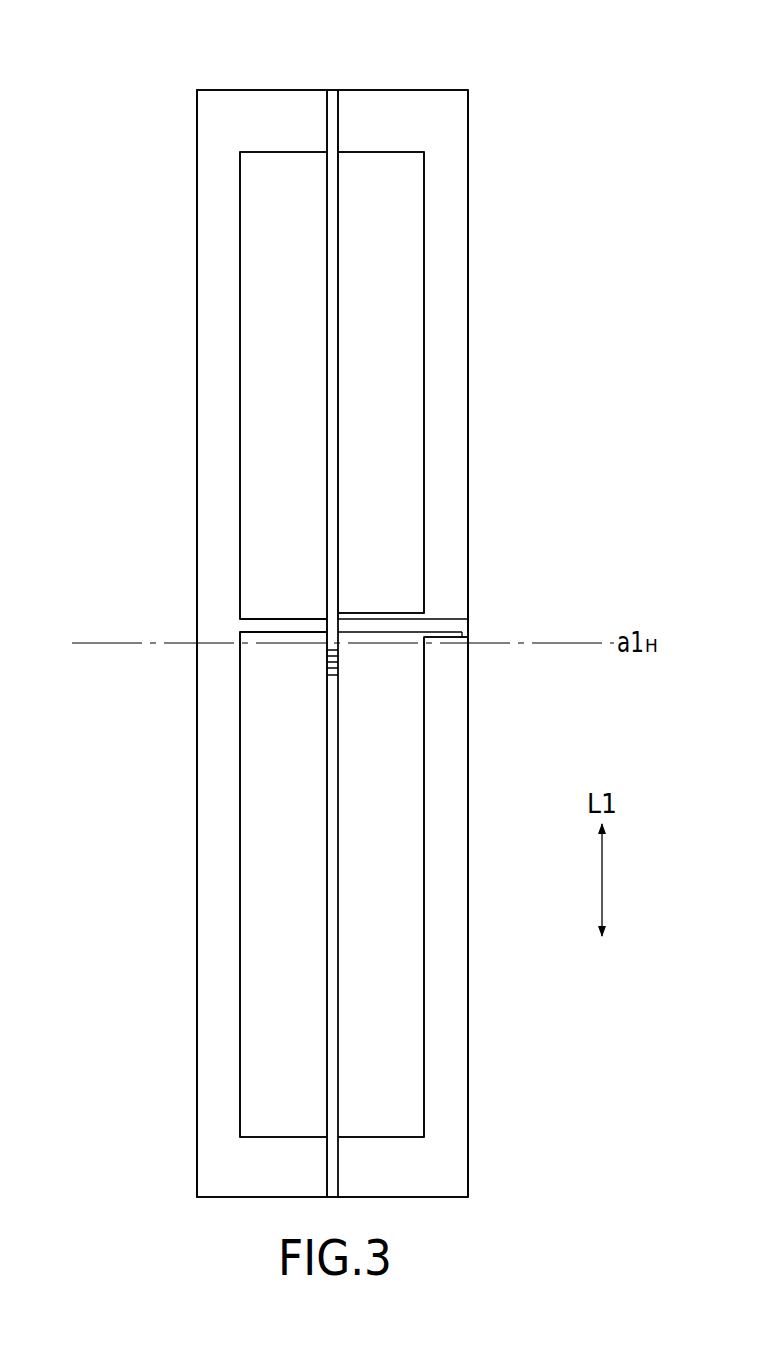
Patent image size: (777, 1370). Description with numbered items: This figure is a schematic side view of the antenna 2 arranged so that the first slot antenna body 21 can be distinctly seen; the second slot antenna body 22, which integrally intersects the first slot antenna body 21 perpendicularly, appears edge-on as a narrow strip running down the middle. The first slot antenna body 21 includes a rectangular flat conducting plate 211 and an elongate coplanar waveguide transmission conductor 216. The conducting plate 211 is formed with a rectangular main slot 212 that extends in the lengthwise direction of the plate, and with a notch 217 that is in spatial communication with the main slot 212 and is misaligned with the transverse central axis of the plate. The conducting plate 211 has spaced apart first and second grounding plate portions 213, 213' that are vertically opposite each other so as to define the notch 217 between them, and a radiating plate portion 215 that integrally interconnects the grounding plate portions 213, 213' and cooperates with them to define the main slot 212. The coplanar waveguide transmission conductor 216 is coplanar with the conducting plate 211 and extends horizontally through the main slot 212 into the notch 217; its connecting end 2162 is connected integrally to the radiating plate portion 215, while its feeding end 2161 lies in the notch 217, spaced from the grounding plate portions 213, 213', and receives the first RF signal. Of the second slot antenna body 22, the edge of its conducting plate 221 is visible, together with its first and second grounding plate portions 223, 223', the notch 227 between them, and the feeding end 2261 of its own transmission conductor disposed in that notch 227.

The antenna 2 is at (132, 74).
The first slot antenna body 21 is at (228, 82).
The conducting plate 211 is at (194, 138).
The main slot 212 is at (261, 200).
The radiating plate portion 215 is at (210, 252).
The second slot antenna body 22 is at (334, 86).
The conducting plate 221 is at (342, 119).
The second grounding plate portion 223' is at (219, 366).
The first grounding plate portion 223 is at (222, 920).
The connecting end 2162 is at (258, 625).
The notch 227 is at (333, 651).
The feeding end 2261 is at (330, 662).
The coplanar waveguide transmission conductor 216 is at (373, 625).
The feeding end 2161 is at (468, 622).
The notch 217 is at (460, 635).
The first grounding plate portion 213 is at (488, 354).
The second grounding plate portion 213' is at (492, 917).